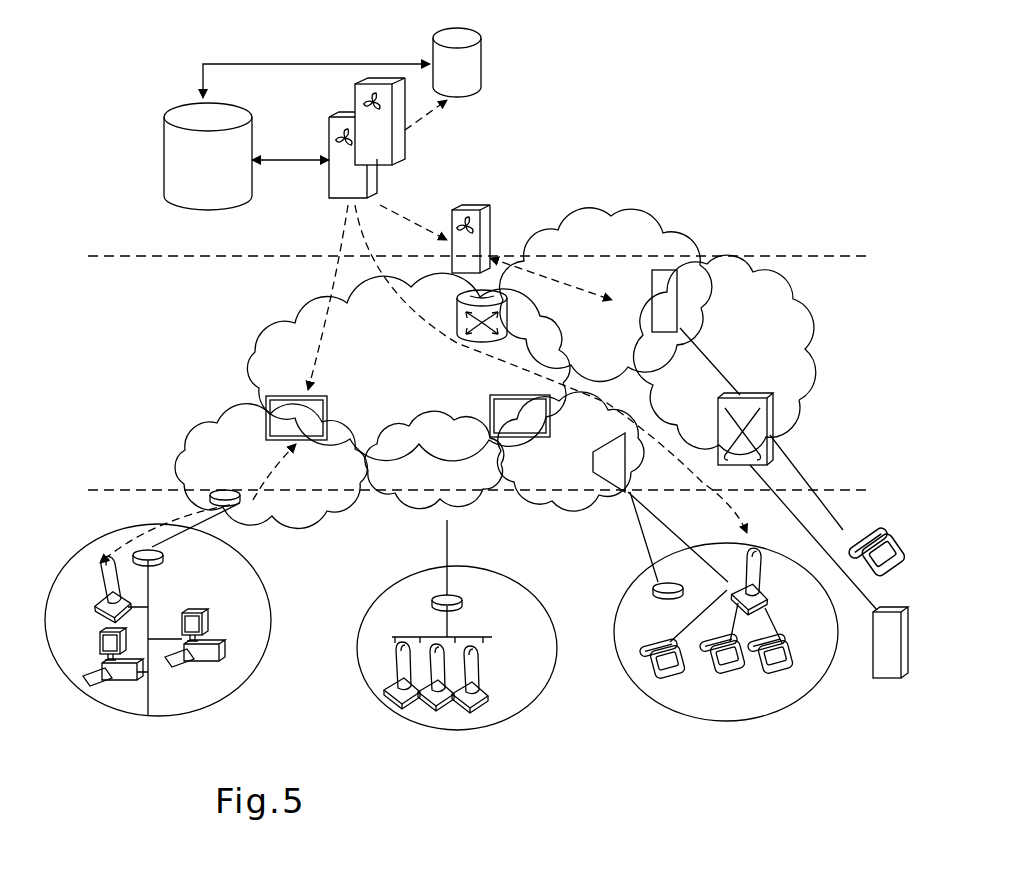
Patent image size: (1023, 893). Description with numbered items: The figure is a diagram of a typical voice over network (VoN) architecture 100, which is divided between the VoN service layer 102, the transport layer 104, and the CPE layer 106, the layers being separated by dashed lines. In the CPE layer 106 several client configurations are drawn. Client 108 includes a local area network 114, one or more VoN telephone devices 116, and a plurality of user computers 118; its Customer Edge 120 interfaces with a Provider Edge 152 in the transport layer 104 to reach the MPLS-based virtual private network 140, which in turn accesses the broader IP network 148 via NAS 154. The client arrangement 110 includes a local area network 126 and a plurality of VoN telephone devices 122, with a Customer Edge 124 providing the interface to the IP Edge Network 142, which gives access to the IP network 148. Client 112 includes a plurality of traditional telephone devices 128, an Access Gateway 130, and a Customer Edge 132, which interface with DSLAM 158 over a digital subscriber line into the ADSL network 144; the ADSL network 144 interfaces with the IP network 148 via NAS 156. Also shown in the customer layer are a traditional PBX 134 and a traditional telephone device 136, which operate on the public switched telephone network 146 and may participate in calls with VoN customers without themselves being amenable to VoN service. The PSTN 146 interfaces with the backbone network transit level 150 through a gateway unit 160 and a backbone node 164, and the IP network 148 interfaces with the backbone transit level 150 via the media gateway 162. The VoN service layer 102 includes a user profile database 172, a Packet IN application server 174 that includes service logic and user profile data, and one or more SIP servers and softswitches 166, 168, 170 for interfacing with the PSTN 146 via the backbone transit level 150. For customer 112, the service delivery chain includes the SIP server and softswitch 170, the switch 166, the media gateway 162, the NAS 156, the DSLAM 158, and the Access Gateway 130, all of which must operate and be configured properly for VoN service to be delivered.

The VoN architecture 100 is at (400, 750).
The VoN service layer 102 is at (845, 105).
The transport layer 104 is at (870, 366).
The CPE layer 106 is at (913, 586).
The client 108 is at (235, 690).
The client arrangement 110 is at (535, 700).
The client 112 is at (826, 680).
The local area network 114 is at (150, 598).
The VoN telephone device 116 is at (95, 598).
The user computers 118 is at (100, 650).
The Customer Edge 120 is at (130, 544).
The VoN telephone devices 122 is at (395, 683).
The Customer Edge 124 is at (455, 596).
The local area network 126 is at (440, 635).
The traditional telephone devices 128 is at (630, 682).
The Access Gateway 130 is at (765, 550).
The Customer Edge 132 is at (652, 588).
The PBX 134 is at (890, 679).
The traditional telephone device 136 is at (878, 522).
The virtual private network 140 is at (200, 432).
The IP Edge Network 142 is at (400, 512).
The ADSL network 144 is at (548, 507).
The public switched telephone network 146 is at (790, 305).
The IP network 148 is at (298, 330).
The backbone network transit level 150 is at (643, 237).
The provider edge router 152 is at (208, 488).
The NAS 154 is at (265, 400).
The NAS 156 is at (528, 442).
The DSLAM 158 is at (630, 484).
The signaling gateway unit 160 is at (770, 437).
The media gateway 162 is at (455, 298).
The broadband network node 164 is at (685, 268).
The SIP Servers and Softswitches 166 is at (485, 226).
The server 168 is at (329, 133).
The SIP Server and Softswitch 170 is at (390, 78).
The user profile database 172 is at (164, 148).
The Packet IN application server 174 is at (484, 58).